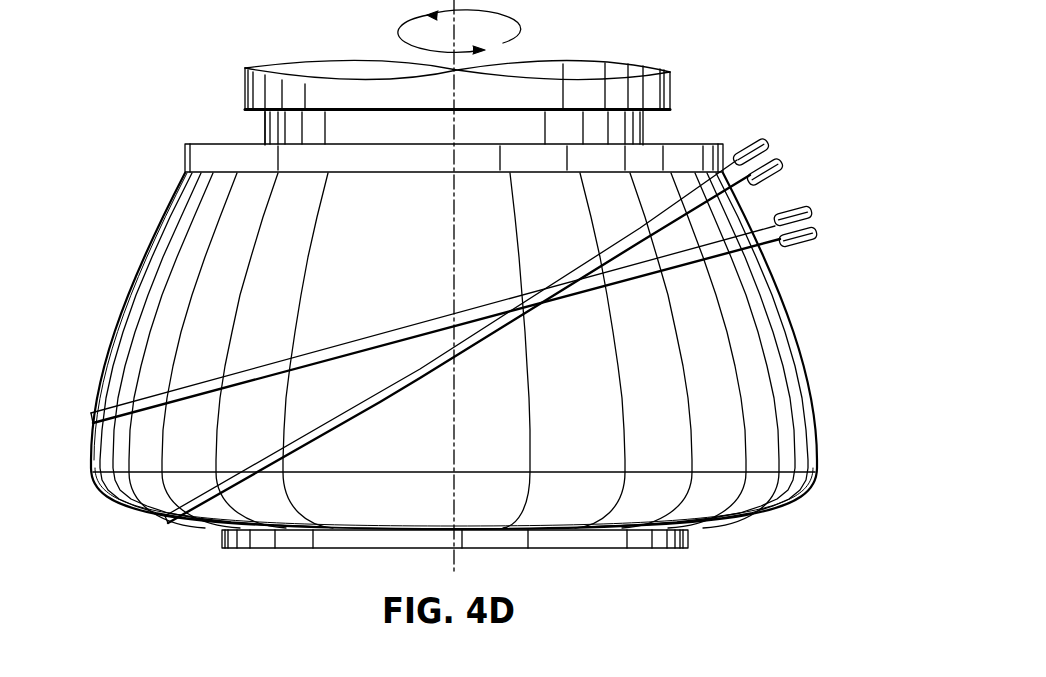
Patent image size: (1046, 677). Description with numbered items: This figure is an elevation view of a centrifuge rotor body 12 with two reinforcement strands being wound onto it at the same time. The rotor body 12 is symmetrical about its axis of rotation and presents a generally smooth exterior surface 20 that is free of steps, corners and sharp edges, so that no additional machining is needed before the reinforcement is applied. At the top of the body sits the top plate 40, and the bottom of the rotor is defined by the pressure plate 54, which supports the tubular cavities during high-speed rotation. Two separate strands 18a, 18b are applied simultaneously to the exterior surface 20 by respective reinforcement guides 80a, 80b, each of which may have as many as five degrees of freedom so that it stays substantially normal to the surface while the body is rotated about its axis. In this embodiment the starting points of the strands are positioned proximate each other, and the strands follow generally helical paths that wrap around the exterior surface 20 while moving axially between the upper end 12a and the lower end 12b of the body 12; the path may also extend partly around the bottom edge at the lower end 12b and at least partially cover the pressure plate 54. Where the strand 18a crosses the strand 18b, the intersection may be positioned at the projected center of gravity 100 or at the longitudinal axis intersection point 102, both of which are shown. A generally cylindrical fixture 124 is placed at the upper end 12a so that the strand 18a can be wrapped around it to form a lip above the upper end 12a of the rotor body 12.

The rotor body 12 is at (438, 335).
The upper end 12a is at (185, 178).
The lower end 12b is at (90, 462).
The strand 18a is at (433, 362).
The strand 18b is at (406, 325).
The exterior surface 20 is at (773, 352).
The top plate 40 is at (678, 146).
The pressure plate 54 is at (680, 551).
The reinforcement guide 80a is at (768, 148).
The reinforcement guide 80b is at (812, 210).
The projected center of gravity 100 is at (92, 418).
The longitudinal axis intersection point 102 is at (170, 523).
The fixture 124 is at (668, 76).